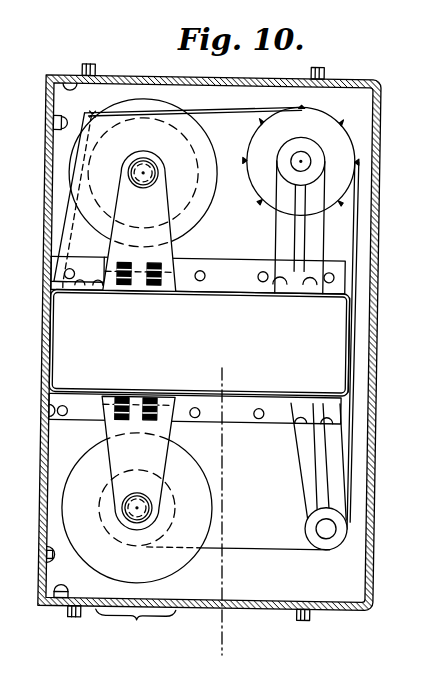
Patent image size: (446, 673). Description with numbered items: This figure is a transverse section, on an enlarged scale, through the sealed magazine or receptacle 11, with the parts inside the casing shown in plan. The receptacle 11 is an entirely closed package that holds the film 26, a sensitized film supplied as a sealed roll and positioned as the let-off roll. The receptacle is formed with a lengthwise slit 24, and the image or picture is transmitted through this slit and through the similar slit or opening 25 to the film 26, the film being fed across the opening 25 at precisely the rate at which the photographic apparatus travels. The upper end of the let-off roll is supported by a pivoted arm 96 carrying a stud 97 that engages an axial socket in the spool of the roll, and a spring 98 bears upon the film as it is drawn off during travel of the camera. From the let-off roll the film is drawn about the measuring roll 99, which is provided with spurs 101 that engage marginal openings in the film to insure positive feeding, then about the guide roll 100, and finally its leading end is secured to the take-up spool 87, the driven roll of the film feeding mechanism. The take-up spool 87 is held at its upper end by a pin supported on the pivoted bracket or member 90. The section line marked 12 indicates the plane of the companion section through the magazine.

The sealed magazine or receptacle 11 is at (405, 62).
The section line 12- 12 is at (252, 377).
The lengthwise slit 24 is at (50, 351).
The slit (opening) 25 is at (346, 339).
The film 26 is at (267, 548).
The take-up spool 87 is at (133, 489).
The pivoted bracket or member 90 is at (141, 453).
The pivoted arm 96 is at (161, 219).
The stud 97 is at (147, 195).
The spring 98 is at (60, 234).
The measuring roll 99 is at (286, 199).
The guide roll 100 is at (328, 533).
The spurs 101 is at (260, 201).